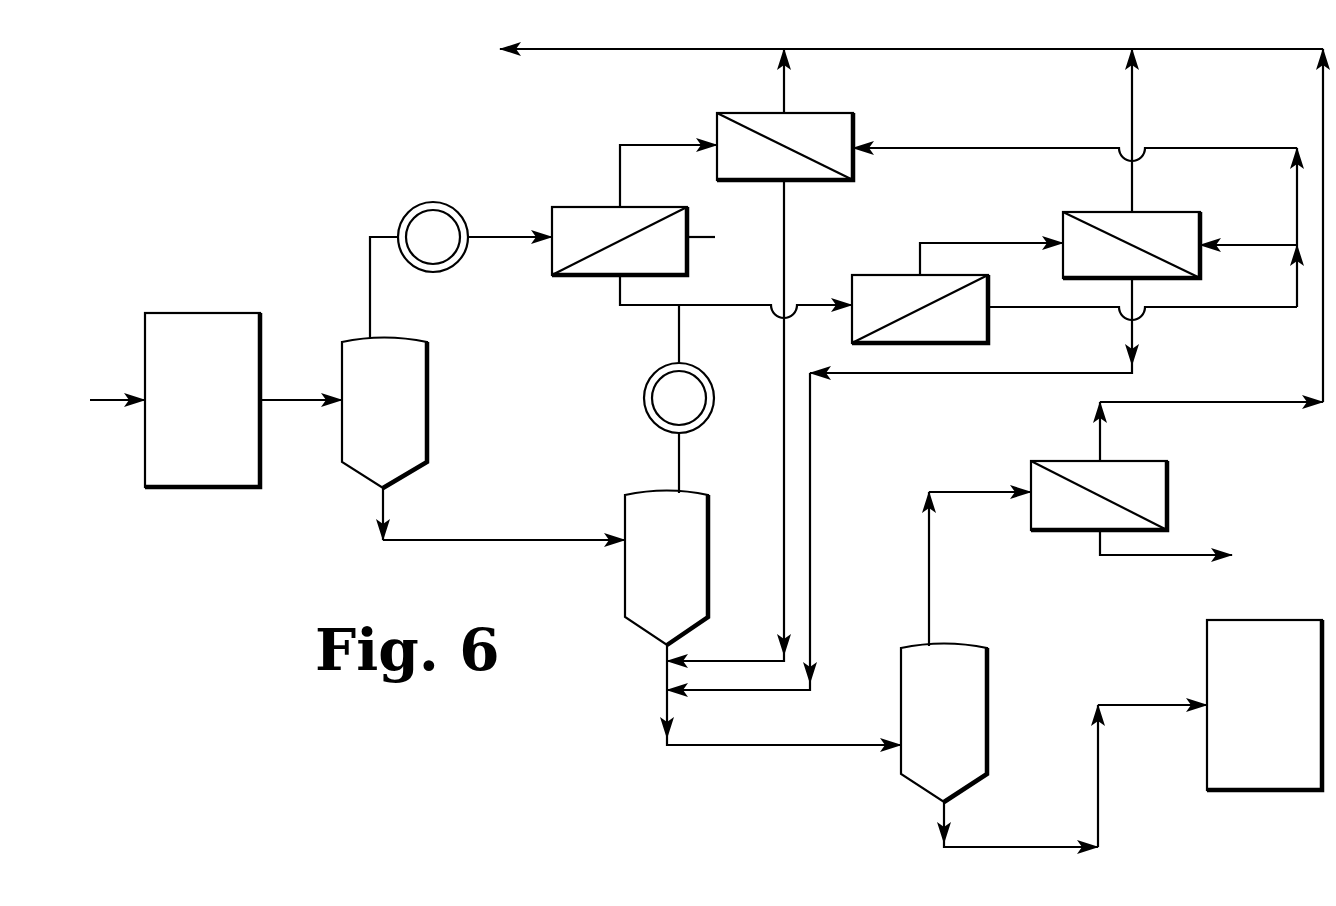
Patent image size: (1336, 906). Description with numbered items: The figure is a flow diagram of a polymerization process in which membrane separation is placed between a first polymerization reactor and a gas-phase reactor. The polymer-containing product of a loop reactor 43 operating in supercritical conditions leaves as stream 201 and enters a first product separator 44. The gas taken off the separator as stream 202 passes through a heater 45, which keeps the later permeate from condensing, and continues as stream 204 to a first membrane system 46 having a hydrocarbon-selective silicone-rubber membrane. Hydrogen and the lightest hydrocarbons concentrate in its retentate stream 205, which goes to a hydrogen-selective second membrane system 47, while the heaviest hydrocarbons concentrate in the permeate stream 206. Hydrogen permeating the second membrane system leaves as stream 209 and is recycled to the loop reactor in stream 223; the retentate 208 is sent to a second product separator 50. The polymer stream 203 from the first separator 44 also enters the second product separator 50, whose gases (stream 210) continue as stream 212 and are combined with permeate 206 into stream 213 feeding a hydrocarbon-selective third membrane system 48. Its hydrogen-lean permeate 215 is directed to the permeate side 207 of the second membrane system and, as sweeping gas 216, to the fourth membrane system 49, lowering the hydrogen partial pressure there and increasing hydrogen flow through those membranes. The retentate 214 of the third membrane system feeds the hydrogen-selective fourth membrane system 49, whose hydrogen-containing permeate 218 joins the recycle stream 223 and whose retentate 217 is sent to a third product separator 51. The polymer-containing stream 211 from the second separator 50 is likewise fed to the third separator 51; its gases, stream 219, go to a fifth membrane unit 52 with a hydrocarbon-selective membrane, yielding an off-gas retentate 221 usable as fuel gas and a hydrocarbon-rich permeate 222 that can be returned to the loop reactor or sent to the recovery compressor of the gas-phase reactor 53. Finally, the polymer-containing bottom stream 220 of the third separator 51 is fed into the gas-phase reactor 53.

The reactor 43 is at (186, 386).
The product separator 44 is at (370, 405).
The heater 45 is at (416, 204).
The first membrane system 46 is at (568, 207).
The second membrane system 47 is at (840, 117).
The third membrane system 48 is at (878, 276).
The fourth membrane system 49 is at (1085, 215).
The second product separator 50 is at (651, 561).
The third product separator 51 is at (928, 713).
The fifth membrane unit 52 is at (1167, 475).
The gas-phase reactor 53 is at (1247, 693).
The stream 201 is at (301, 382).
The stream 202 is at (359, 287).
The stream 203 is at (504, 514).
The stream 204 is at (510, 222).
The retentate stream 205 is at (668, 161).
The permeate stream 206 is at (622, 293).
The permeate side 207 is at (1075, 140).
The retentate 208 is at (755, 420).
The stream 209 is at (814, 81).
The stream 210 is at (706, 463).
The polymer-containing stream 211 is at (663, 642).
The stream 212 is at (688, 369).
The stream 213 is at (765, 298).
The retentate stream 214 is at (991, 241).
The permeate stream 215 is at (1142, 298).
The sweeping gas 216 is at (1248, 227).
The retentate 217 is at (928, 484).
The permeate stream 218 is at (1158, 130).
The stream 219 is at (980, 569).
The bottom stream 220 is at (1075, 776).
The off-gas 221 is at (1194, 549).
The permeate stream 222 is at (1180, 255).
The recycle stream 223 is at (911, 33).